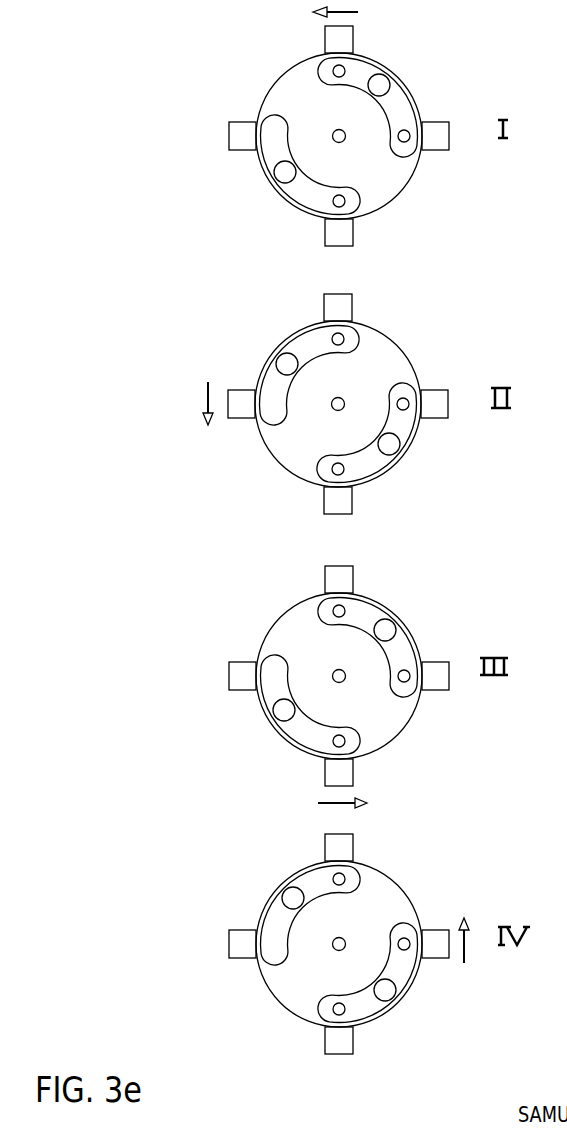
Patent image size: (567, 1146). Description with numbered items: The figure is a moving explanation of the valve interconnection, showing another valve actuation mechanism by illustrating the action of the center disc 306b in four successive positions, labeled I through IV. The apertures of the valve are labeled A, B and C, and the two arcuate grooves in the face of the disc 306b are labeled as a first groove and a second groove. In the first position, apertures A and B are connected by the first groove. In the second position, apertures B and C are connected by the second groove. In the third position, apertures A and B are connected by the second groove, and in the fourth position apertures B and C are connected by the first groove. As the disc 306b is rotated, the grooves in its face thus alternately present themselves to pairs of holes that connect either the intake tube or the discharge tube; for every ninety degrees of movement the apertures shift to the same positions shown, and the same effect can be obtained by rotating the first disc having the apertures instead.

The center disc 306b is at (321, 136).